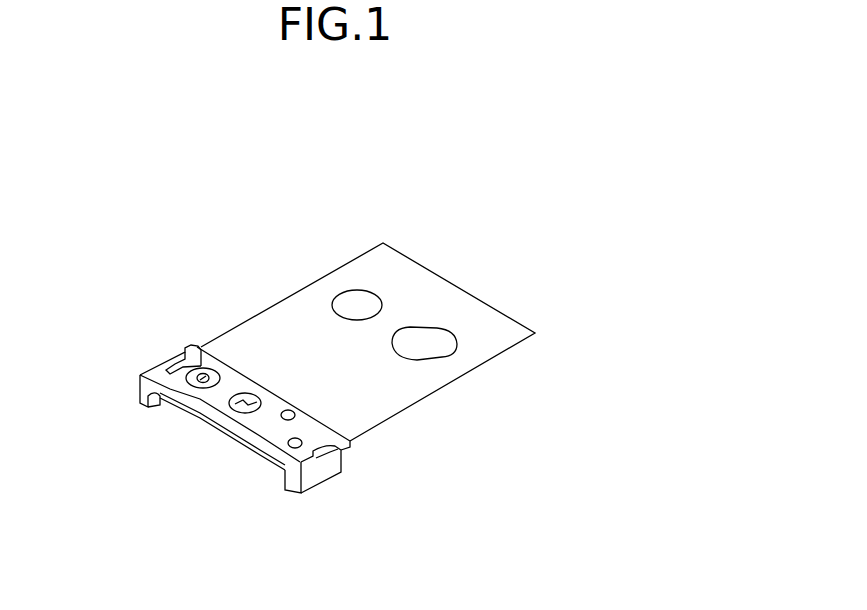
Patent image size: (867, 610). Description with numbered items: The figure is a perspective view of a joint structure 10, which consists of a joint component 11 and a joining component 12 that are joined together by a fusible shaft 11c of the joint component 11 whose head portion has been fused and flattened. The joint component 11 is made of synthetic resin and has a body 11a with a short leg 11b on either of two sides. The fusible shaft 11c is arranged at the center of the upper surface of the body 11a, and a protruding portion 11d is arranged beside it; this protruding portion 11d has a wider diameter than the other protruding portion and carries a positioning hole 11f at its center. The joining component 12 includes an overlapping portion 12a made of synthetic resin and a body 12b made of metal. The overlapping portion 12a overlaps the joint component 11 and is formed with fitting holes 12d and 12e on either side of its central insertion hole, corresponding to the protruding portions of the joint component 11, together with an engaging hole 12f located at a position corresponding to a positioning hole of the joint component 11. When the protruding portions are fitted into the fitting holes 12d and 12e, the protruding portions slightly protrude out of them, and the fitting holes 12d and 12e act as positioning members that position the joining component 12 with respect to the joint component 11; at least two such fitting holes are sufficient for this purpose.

The joint structure 10 is at (333, 124).
The joint component 11 is at (218, 402).
The body 11a is at (207, 425).
The short leg 11b is at (140, 394).
The fusible shaft 11c is at (245, 397).
The protruding portion 11d is at (148, 408).
The positioning hole 11f is at (176, 364).
The joining component 12 is at (342, 249).
The overlapping portion 12a is at (277, 407).
The body 12b is at (440, 297).
The fitting hole 12d is at (196, 372).
The fitting hole 12e is at (296, 410).
The engaging hole 12f is at (285, 441).